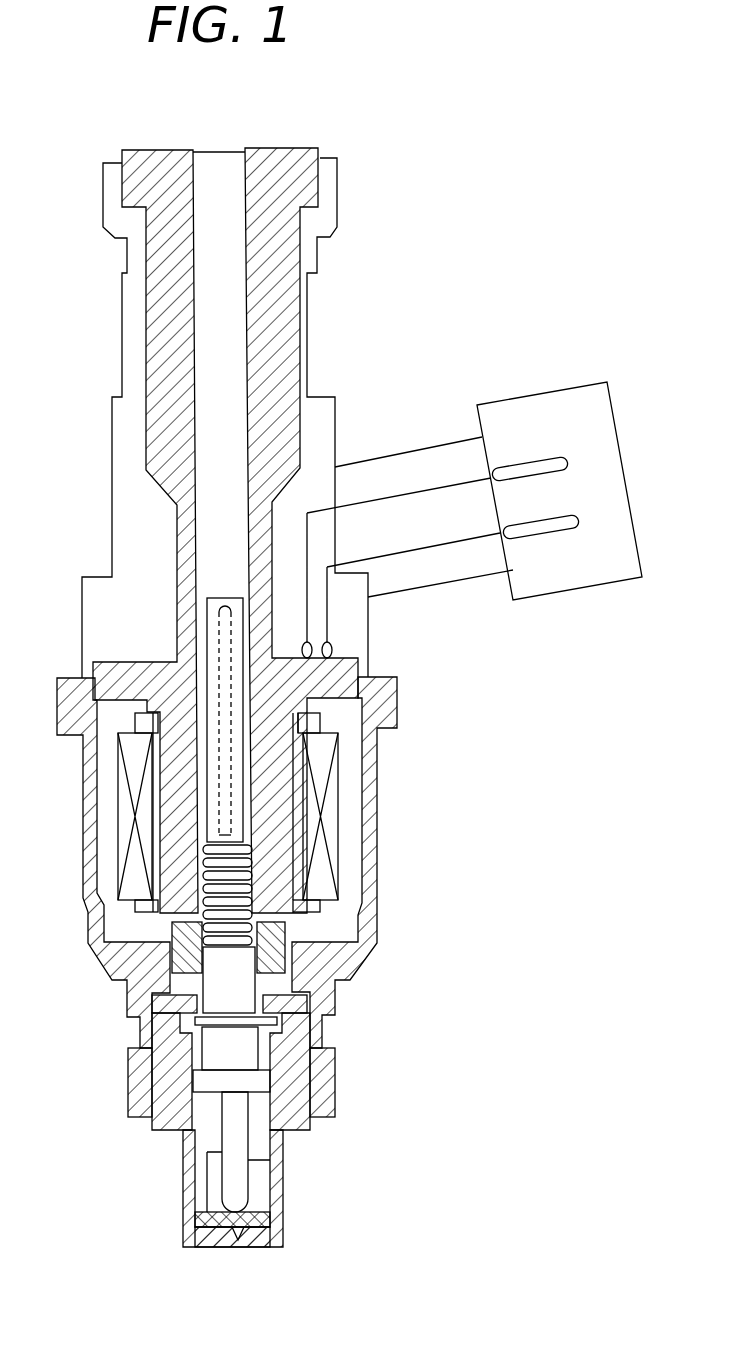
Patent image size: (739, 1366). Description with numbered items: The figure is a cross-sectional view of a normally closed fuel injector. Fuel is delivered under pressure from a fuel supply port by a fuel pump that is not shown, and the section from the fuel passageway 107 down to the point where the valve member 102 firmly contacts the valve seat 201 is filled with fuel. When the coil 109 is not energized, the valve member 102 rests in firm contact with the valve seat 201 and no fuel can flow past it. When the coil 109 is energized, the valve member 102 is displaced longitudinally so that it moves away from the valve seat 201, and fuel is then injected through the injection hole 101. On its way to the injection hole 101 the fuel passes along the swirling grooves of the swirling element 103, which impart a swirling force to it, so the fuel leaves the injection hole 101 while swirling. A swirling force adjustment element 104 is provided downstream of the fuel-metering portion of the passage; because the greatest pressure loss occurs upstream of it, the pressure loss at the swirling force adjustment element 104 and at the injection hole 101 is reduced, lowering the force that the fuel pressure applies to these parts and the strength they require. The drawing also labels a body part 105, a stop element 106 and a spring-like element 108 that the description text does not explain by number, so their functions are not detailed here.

The injection hole 101 is at (238, 1238).
The valve member 102 is at (232, 1153).
The swirling element 103 is at (260, 1192).
The swirling force adjustment element 104 is at (195, 1213).
The stationary core body 105 is at (133, 675).
The spring stopper 106 is at (277, 937).
The fuel passageway 107 is at (227, 412).
The spring 108 is at (257, 863).
The coil 109 is at (323, 817).
The valve seat 201 is at (265, 1215).